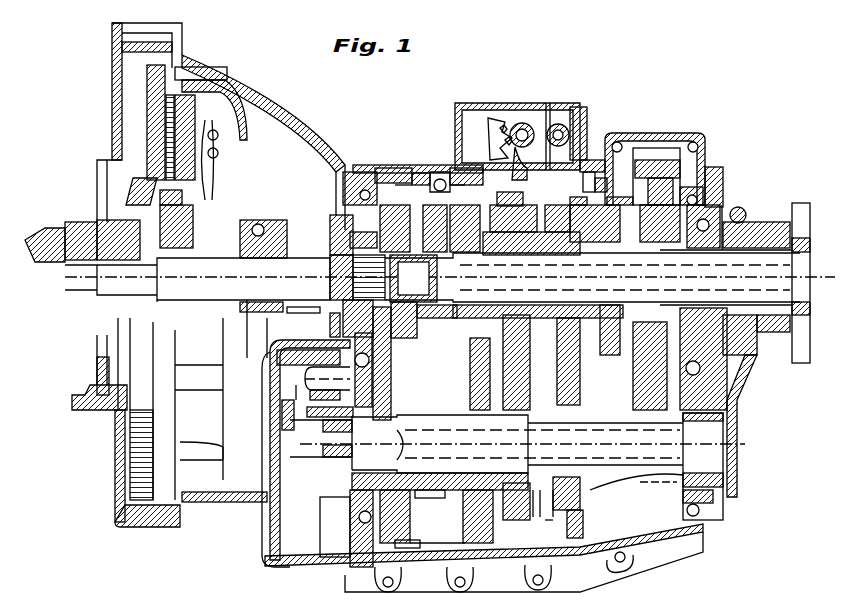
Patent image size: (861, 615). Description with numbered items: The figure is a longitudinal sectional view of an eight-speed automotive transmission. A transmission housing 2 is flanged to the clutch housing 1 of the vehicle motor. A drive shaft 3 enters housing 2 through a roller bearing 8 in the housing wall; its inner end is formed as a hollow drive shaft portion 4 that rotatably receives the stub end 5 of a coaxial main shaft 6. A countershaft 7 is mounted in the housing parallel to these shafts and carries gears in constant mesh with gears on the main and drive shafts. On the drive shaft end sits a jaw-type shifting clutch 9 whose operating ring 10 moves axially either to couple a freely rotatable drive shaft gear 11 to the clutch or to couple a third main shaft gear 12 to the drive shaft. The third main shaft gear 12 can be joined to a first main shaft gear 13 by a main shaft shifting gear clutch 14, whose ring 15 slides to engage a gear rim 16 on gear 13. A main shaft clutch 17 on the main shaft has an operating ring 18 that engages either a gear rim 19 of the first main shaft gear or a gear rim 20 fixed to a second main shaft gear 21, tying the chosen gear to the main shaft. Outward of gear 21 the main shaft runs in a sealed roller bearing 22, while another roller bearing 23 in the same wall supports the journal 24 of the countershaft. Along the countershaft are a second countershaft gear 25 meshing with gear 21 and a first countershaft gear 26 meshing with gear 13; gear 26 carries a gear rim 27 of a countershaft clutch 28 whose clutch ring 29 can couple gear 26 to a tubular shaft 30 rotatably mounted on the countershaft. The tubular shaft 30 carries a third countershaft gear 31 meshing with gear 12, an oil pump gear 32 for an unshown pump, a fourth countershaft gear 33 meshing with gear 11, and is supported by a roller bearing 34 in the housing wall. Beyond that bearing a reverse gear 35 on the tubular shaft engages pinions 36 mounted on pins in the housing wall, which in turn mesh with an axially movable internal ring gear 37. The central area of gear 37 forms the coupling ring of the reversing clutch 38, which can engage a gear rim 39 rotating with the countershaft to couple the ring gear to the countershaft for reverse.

The clutch housing 1 is at (220, 42).
The transmission housing 2 is at (362, 165).
The drive shaft 3 is at (290, 252).
The hollow or tubular drive shaft portion 4 is at (345, 288).
The plug or stub end 5 is at (342, 272).
The main shaft 6 is at (785, 268).
The countershaft 7 is at (513, 454).
The roller bearing 8 is at (343, 207).
The shifting clutch 9 is at (420, 170).
The guide or operating ring 10 is at (445, 172).
The drive shaft gear 11 is at (395, 168).
The third main shaft gear 12 is at (499, 203).
The first main shaft gear 13 is at (597, 170).
The main shaft shifting gear clutch 14 is at (540, 160).
The ring 15 is at (490, 130).
The gear rim 16 is at (549, 103).
The main shaft clutch 17 is at (655, 183).
The operating ring 18 is at (622, 180).
The gear rim 19 is at (605, 178).
The gear rim 20 is at (660, 162).
The second main shaft gear 21 is at (692, 168).
The roller bearing 22 is at (718, 205).
The roller bearing 23 is at (728, 403).
The journal 24 is at (700, 437).
The second countershaft gear 25 is at (656, 600).
The first countershaft gear 26 is at (583, 527).
The gear rim 27 is at (553, 592).
The countershaft clutch 28 is at (523, 533).
The clutch ring 29 is at (490, 555).
The tubular or hollow shaft 30 is at (473, 472).
The third countershaft gear 31 is at (460, 550).
The oil pump gear 32 is at (447, 534).
The fourth countershaft gear 33 is at (396, 608).
The roller bearing 34 is at (350, 497).
The reverse gear 35 is at (323, 425).
The pinions 36 is at (267, 371).
The internal ring gear 37 is at (263, 507).
The shifting reversing clutch 38 is at (263, 442).
The gear rim 39 is at (270, 410).